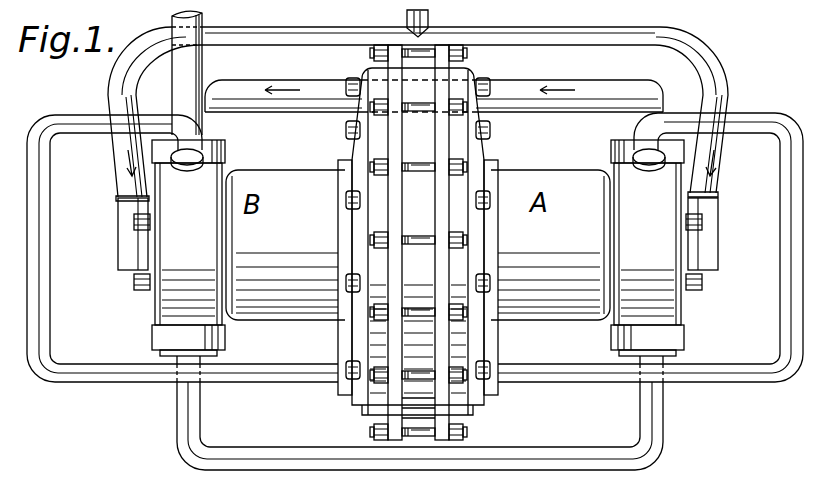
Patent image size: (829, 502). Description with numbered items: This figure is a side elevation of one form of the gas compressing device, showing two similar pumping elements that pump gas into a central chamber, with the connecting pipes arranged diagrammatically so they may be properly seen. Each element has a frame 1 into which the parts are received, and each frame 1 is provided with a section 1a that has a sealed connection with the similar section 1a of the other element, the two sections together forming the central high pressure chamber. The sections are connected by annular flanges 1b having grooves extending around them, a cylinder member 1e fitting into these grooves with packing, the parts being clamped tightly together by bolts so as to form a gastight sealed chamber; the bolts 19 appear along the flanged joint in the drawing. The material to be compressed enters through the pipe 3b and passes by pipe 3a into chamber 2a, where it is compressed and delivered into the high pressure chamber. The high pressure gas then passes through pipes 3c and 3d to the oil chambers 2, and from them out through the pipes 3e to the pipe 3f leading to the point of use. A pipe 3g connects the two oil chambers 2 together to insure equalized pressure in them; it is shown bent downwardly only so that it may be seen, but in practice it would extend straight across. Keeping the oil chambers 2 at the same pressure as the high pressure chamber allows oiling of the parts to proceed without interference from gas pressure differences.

The frame 1 is at (282, 178).
The frame section 1a is at (352, 143).
The annular flange 1b is at (444, 135).
The cylinder member 1e is at (423, 415).
The oil chamber 2 is at (170, 297).
The chamber 2a is at (125, 253).
The pipe 3a is at (122, 152).
The pipe 3b is at (428, 16).
The pipe 3c is at (787, 182).
The pipe 3d is at (60, 118).
The pipe 3e is at (207, 110).
The pipe 3f is at (197, 64).
The pipe 3g is at (180, 415).
The bolts 19 is at (377, 107).